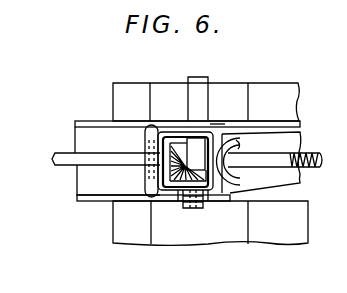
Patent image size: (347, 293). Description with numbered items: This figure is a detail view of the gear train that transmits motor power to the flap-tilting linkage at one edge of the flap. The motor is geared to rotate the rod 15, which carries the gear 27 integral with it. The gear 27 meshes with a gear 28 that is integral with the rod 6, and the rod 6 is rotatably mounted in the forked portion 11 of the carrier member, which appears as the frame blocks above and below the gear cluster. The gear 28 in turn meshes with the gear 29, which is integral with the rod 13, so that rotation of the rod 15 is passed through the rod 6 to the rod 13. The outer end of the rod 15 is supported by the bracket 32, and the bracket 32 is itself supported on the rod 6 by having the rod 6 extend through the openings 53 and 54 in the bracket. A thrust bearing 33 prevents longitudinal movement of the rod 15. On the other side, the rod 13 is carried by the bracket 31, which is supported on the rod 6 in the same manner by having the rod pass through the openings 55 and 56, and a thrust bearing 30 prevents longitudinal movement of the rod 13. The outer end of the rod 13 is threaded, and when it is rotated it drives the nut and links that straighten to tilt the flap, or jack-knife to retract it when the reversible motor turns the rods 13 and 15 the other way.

The rod 6 is at (198, 80).
The forked portion 11 is at (160, 121).
The rod 13 is at (313, 156).
The rod 15 is at (95, 163).
The gear 27 is at (180, 155).
The gear 28 is at (207, 196).
The gear 29 is at (232, 148).
The thrust bearing 30 is at (232, 172).
The bracket 31 is at (221, 188).
The bracket 32 is at (160, 140).
The thrust bearing 33 is at (143, 145).
The opening 53 is at (212, 126).
The opening 54 is at (178, 200).
The opening 55 is at (216, 128).
The opening 56 is at (193, 190).